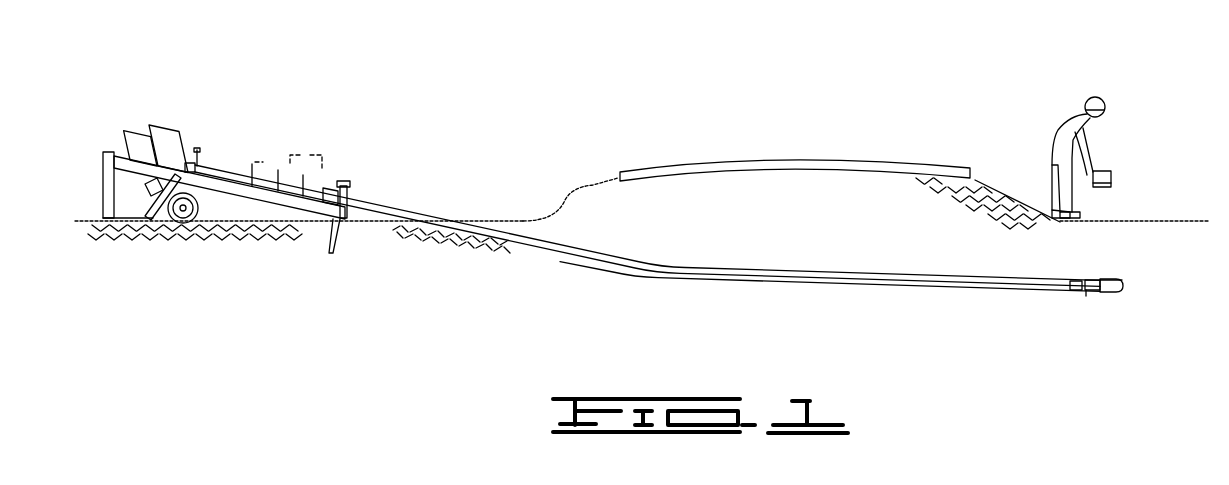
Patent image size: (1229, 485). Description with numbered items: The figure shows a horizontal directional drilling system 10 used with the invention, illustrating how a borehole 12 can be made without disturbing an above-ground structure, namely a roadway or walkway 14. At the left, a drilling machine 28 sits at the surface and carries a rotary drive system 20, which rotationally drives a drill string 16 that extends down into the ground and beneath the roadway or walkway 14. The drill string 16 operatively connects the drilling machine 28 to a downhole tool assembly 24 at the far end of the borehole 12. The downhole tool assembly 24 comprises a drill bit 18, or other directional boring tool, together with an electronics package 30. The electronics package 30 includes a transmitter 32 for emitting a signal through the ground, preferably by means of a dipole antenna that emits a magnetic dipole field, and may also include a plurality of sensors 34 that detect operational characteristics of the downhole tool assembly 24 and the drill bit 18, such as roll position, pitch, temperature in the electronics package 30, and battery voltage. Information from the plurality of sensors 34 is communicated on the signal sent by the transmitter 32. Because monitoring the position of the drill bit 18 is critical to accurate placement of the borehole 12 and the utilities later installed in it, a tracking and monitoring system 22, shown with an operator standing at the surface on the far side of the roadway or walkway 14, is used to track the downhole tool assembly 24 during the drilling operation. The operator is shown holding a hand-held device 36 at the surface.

The horizontal directional drilling system 10 is at (318, 100).
The borehole 12 is at (967, 270).
The roadway or walkway 14 is at (748, 160).
The drill string 16 is at (440, 218).
The drill bit 18 is at (1114, 293).
The rotary drive system 20 is at (184, 126).
The tracking and monitoring system 22 is at (1105, 153).
The downhole tool assembly 24 is at (1085, 295).
The drilling machine 28 is at (108, 150).
The electronics package 30 is at (1095, 292).
The transmitter 32 is at (1074, 291).
The plurality of sensors 34 is at (1118, 283).
The hand tool 36 is at (1110, 173).